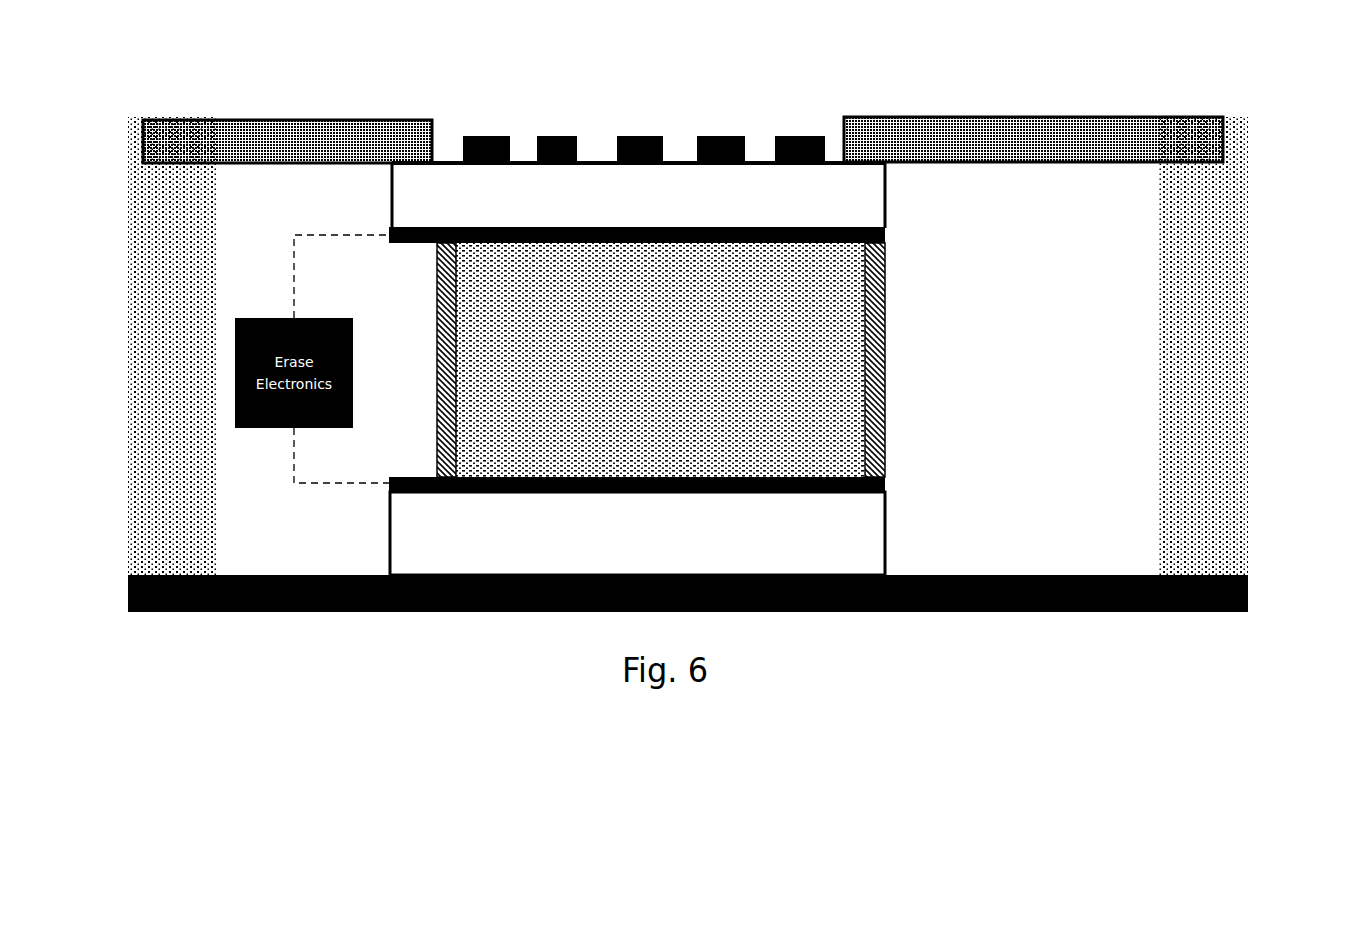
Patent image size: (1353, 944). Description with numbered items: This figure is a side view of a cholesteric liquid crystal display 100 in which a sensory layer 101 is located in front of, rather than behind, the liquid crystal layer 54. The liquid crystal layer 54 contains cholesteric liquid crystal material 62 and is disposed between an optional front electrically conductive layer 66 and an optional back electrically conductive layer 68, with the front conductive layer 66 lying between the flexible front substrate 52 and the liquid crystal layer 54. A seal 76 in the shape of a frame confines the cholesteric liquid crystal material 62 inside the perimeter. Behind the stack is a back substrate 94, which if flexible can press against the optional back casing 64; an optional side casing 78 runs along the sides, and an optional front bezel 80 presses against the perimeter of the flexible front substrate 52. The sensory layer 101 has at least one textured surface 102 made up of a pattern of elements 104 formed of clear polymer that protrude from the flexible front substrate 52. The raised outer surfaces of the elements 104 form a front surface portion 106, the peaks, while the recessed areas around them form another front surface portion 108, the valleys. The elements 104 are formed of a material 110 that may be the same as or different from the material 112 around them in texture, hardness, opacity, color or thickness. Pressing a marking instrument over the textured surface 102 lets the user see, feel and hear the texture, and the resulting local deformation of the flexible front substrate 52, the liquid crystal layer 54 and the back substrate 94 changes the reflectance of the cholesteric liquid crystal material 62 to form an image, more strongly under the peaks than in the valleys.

The cholesteric liquid crystal display 100 is at (1308, 96).
The flexible front substrate 52 is at (890, 184).
The liquid crystal layer 54 is at (822, 372).
The cholesteric liquid crystal material 62 is at (800, 319).
The back casing 64 is at (1250, 585).
The front electrically conductive layer 66 is at (885, 236).
The back electrically conductive layer 68 is at (888, 478).
The seal 76 is at (437, 288).
The side casing 78 is at (1248, 358).
The front bezel 80 is at (1030, 117).
The back substrate 94 is at (845, 516).
The sensory layer 101 is at (650, 112).
The textured surface 102 is at (802, 135).
The elements 104 is at (742, 135).
The front surface portion 106 is at (485, 137).
The front surface portion 108 is at (603, 160).
The material 110 is at (463, 135).
The material 112 is at (435, 155).